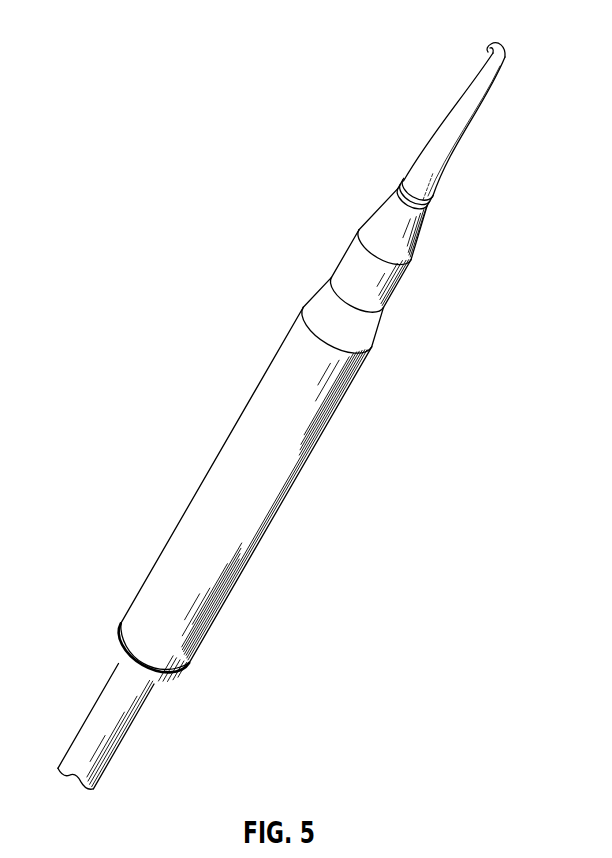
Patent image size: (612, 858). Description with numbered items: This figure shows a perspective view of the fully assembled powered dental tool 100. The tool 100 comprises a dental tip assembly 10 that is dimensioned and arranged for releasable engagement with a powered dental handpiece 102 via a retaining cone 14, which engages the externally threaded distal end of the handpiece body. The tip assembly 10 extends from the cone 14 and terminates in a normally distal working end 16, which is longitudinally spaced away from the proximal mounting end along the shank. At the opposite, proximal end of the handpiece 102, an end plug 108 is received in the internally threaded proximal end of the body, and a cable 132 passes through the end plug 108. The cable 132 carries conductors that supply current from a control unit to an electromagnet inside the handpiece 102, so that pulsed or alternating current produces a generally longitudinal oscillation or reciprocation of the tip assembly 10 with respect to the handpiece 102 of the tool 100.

The dental tool 100 is at (288, 400).
The powered dental handpiece 102 is at (282, 483).
The end plug 108 is at (118, 652).
The cable 132 is at (102, 728).
The retaining cone 14 is at (393, 277).
The dental tip assembly 10 is at (445, 203).
The distal working end 16 is at (498, 46).